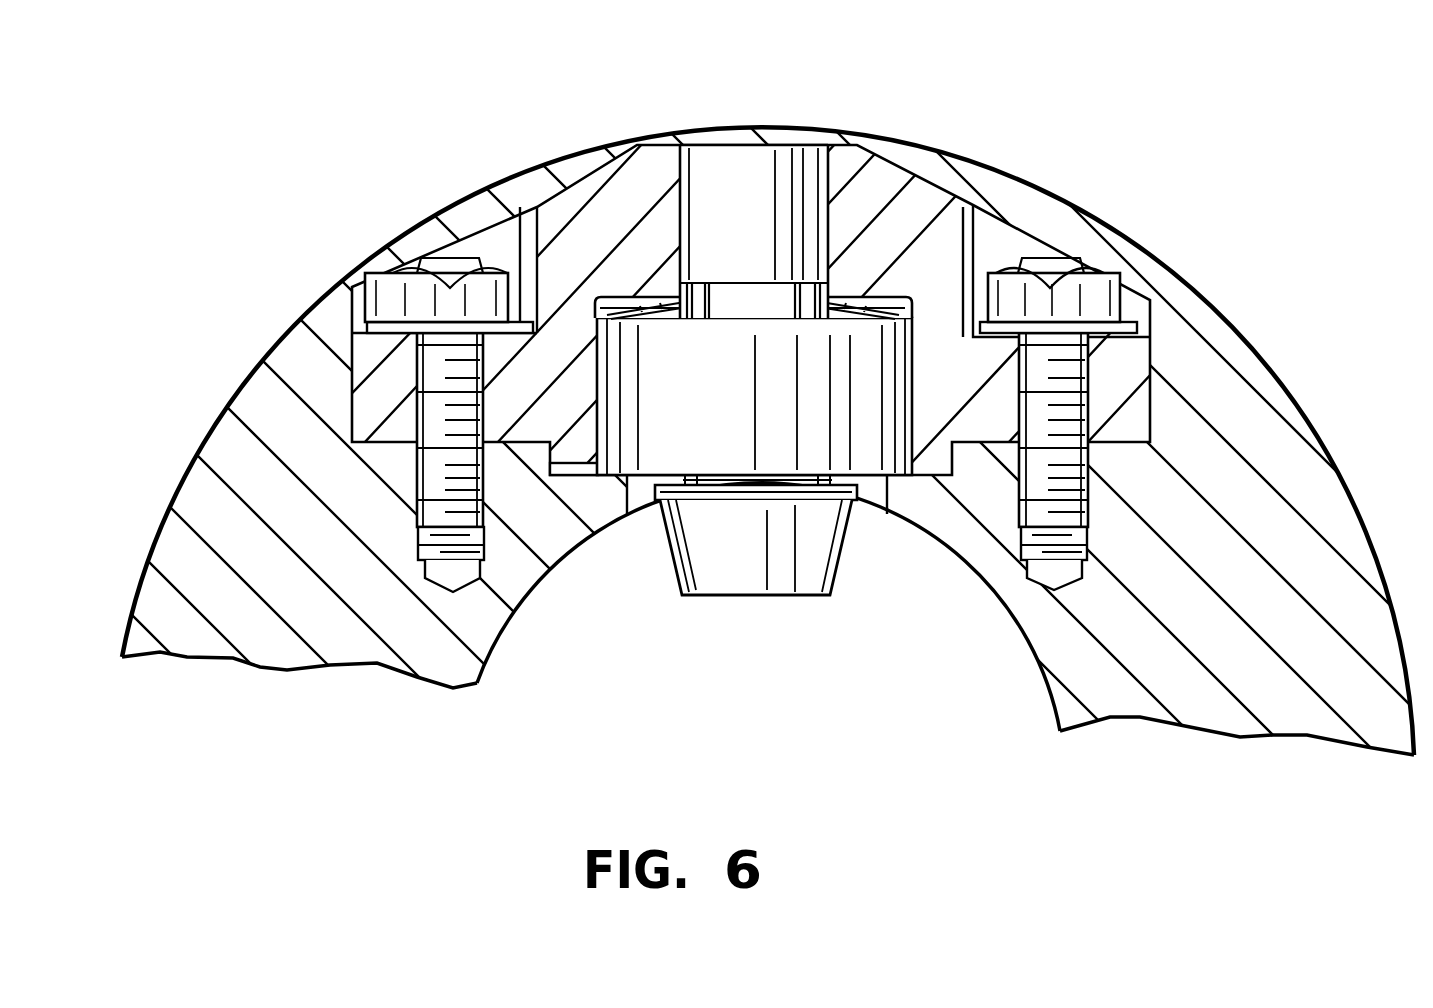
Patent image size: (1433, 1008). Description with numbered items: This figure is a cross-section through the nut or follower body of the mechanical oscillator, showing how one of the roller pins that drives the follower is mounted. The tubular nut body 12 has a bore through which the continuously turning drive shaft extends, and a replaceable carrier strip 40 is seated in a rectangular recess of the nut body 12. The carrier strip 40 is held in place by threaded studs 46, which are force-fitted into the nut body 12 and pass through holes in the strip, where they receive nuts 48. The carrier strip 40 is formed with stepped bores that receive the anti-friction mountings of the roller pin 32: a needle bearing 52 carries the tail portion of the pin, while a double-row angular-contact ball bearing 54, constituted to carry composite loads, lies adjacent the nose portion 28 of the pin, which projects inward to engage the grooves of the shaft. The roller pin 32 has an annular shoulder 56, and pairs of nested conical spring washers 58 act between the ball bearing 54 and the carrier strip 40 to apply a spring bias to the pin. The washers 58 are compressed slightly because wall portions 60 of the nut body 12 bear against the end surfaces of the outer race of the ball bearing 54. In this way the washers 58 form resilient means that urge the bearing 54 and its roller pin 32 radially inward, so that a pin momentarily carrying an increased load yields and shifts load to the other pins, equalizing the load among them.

The nut body 12 is at (1330, 565).
The nose portion 28 is at (777, 563).
The roller pin 32 is at (727, 292).
The carrier strip 40 is at (585, 200).
The threaded stud 46 is at (417, 481).
The nut 48 is at (395, 290).
The needle bearing 52 is at (732, 200).
The double-row angular-contact ball bearing 54 is at (880, 445).
The annular shoulder 56 is at (790, 290).
The conical spring washers 58 is at (886, 300).
The wall portions 60 is at (613, 483).